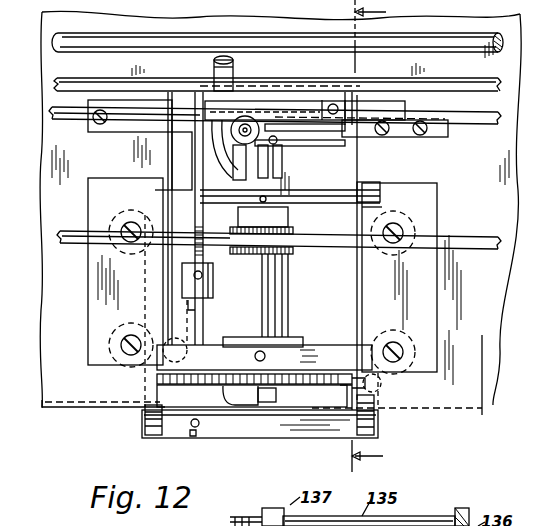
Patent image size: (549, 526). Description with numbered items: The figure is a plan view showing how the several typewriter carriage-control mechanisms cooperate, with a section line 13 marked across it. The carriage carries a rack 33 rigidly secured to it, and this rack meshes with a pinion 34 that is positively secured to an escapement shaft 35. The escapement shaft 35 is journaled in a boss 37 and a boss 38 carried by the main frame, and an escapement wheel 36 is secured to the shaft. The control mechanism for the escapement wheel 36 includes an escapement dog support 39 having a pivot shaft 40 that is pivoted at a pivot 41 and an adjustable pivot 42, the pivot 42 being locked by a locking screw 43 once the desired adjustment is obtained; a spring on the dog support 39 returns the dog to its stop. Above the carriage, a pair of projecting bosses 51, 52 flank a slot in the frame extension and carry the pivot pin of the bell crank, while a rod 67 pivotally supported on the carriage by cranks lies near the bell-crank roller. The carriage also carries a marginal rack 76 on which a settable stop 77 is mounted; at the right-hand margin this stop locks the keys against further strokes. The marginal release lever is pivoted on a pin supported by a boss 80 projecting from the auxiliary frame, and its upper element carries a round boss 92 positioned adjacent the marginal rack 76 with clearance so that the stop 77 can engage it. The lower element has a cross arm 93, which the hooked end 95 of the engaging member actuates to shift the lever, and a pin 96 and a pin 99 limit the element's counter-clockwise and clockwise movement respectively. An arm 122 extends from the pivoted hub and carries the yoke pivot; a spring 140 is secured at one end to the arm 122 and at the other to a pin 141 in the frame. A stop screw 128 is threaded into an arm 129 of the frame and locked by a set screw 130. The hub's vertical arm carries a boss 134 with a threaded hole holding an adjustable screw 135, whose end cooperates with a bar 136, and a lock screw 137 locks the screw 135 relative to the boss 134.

The section line 13 is at (354, 241).
The rack 33 is at (450, 240).
The pinion 34 is at (300, 232).
The escapement shaft 35 is at (282, 290).
The escapement wheel 36 is at (299, 386).
The boss 37 is at (328, 200).
The boss 38 is at (336, 353).
The escapement dog support 39 is at (243, 402).
The pivot shaft 40 is at (352, 372).
The pivot 41 is at (137, 406).
The adjustable pivot 42 is at (385, 379).
The locking screw 43 is at (378, 412).
The projecting boss 51 is at (248, 116).
The projecting boss 52 is at (207, 95).
The rod 67 is at (460, 37).
The marginal rack 76 is at (457, 122).
The settable stop 77 is at (272, 104).
The boss 80 is at (218, 168).
The round boss 92 is at (277, 138).
The cross arm 93 is at (252, 172).
The hooked end 95 is at (246, 197).
The pin 96 is at (272, 164).
The pin 99 is at (282, 150).
The arm 122 is at (197, 338).
The stop screw 128 is at (195, 428).
The arm 129 is at (279, 428).
The set screw 130 is at (192, 433).
The boss 134 is at (183, 288).
The adjustable screw 135 is at (197, 178).
The bar 136 is at (455, 86).
The lock screw 137 is at (194, 274).
The spring 140 is at (190, 306).
The pin 141 is at (172, 350).